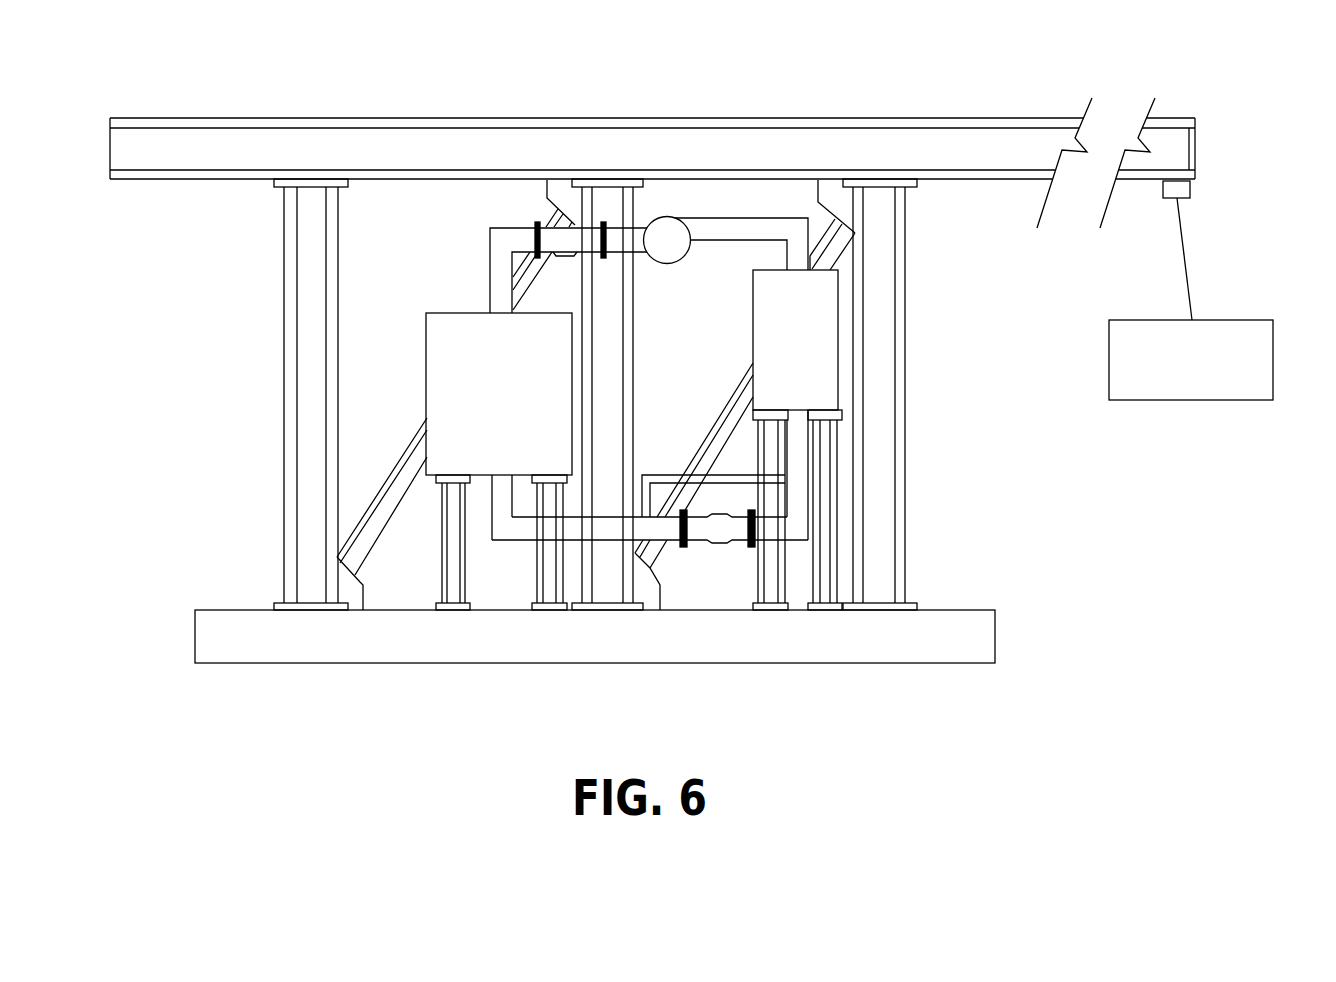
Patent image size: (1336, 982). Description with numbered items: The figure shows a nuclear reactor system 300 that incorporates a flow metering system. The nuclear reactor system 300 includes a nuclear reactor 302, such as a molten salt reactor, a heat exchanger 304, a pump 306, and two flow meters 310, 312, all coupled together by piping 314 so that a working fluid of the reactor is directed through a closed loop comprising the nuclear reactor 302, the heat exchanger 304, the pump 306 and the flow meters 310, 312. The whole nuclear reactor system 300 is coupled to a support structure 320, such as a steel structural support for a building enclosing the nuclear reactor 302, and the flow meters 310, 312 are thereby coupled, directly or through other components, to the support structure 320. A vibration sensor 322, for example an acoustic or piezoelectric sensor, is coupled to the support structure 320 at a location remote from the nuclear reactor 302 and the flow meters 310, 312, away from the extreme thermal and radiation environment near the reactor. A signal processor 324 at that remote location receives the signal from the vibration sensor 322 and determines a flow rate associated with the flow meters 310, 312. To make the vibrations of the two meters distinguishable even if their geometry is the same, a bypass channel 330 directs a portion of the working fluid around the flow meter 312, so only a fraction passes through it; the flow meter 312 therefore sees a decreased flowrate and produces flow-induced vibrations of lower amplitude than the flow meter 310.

The nuclear reactor system 300 is at (222, 351).
The nuclear reactor 302 is at (510, 415).
The heat exchanger 304 is at (813, 364).
The pump 306 is at (665, 240).
The flow meter 310 is at (572, 238).
The flow meter 312 is at (718, 528).
The piping 314 is at (511, 528).
The support structure 320 is at (922, 225).
The vibration sensor 322 is at (1178, 188).
The signal processor 324 is at (1210, 383).
The bypass channel 330 is at (637, 490).